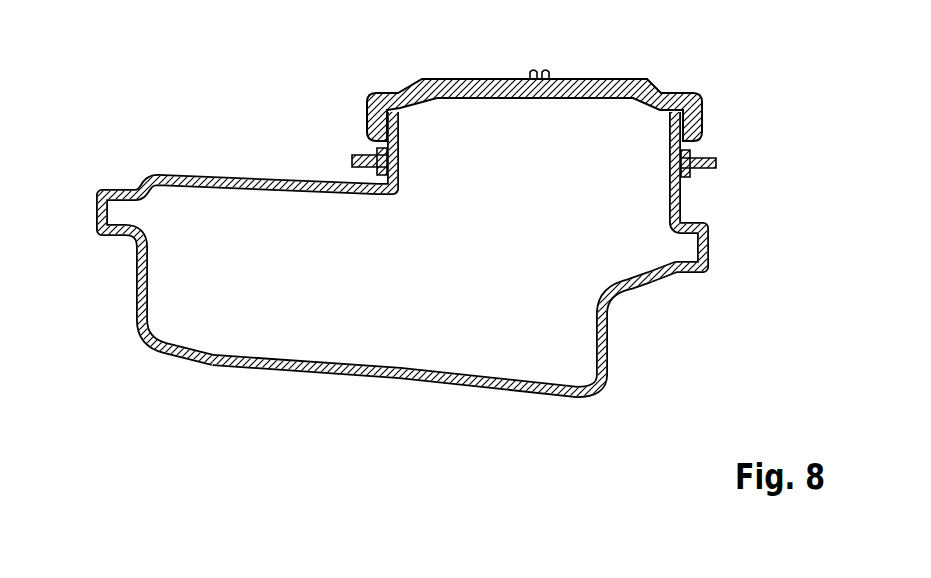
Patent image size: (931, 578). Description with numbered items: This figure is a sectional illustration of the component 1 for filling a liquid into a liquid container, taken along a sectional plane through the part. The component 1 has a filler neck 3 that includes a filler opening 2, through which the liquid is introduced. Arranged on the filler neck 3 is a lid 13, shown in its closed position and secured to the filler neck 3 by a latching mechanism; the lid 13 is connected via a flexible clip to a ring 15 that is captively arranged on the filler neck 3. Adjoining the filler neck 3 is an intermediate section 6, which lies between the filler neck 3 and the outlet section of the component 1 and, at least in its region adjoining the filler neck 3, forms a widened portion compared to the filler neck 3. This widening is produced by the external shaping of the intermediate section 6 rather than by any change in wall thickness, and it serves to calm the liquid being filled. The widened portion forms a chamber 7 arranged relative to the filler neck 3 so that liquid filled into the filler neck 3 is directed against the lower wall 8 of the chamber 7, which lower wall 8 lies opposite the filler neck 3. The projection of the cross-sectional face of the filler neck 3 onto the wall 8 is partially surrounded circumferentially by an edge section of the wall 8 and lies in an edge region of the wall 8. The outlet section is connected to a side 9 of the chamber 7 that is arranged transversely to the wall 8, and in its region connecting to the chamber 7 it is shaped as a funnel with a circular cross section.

The component 1 is at (424, 241).
The filler opening 2 is at (587, 153).
The filler neck 3 is at (682, 197).
The intermediate section 6 is at (130, 309).
The chamber 7 is at (181, 176).
The lower wall 8 is at (385, 386).
The side 9 is at (612, 335).
The lid 13 is at (478, 80).
The ring 15 is at (707, 156).